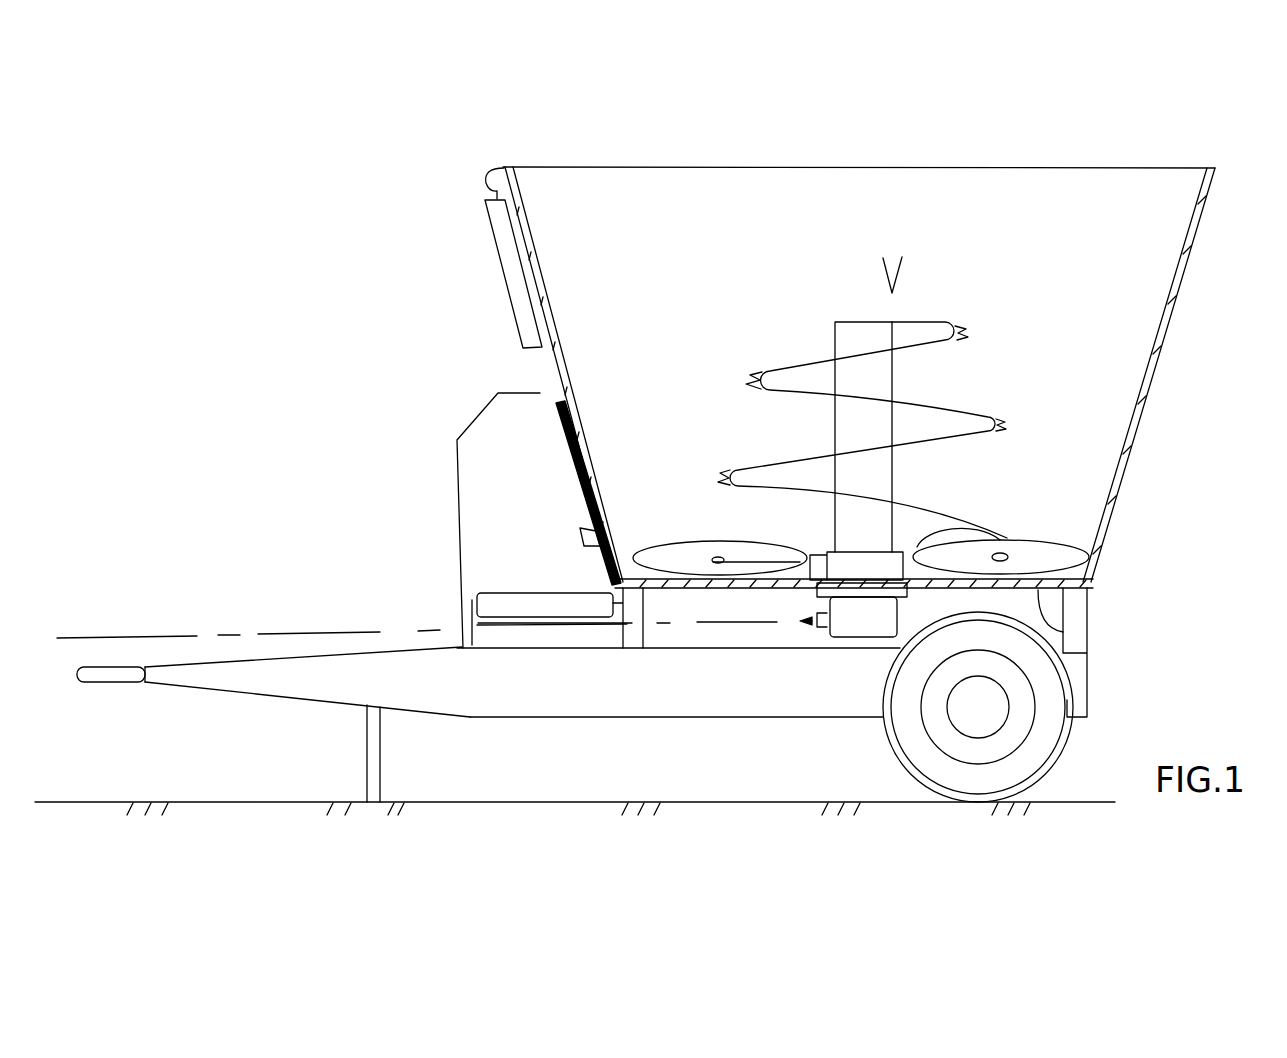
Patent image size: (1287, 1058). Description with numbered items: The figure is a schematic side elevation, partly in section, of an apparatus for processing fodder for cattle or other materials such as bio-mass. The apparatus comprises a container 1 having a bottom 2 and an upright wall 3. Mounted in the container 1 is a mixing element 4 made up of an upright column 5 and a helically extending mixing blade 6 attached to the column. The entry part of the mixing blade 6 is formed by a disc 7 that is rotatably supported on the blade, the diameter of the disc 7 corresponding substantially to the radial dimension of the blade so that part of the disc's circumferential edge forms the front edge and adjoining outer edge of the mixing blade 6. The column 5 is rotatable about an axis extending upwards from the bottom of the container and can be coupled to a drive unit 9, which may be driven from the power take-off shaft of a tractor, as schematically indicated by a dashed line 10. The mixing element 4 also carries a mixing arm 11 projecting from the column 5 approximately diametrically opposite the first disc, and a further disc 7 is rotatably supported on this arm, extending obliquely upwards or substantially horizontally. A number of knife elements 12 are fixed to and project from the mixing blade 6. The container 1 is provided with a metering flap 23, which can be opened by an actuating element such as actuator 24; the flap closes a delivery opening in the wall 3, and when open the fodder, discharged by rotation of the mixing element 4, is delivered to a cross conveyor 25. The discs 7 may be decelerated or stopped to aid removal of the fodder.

The container 1 is at (1160, 240).
The bottom 2 is at (1087, 628).
The upright wall 3 is at (1178, 306).
The mixing element 4 is at (892, 293).
The upright column 5 is at (865, 328).
The helically extending mixing blade 6 is at (780, 373).
The disc 7 is at (653, 560).
The drive unit 9 is at (858, 622).
The dashed line 10 is at (340, 632).
The mixing arm 11 is at (755, 562).
The knife elements 12 is at (990, 420).
The metering flap 23 is at (563, 447).
The actuator 24 is at (505, 230).
The cross conveyor 25 is at (510, 593).